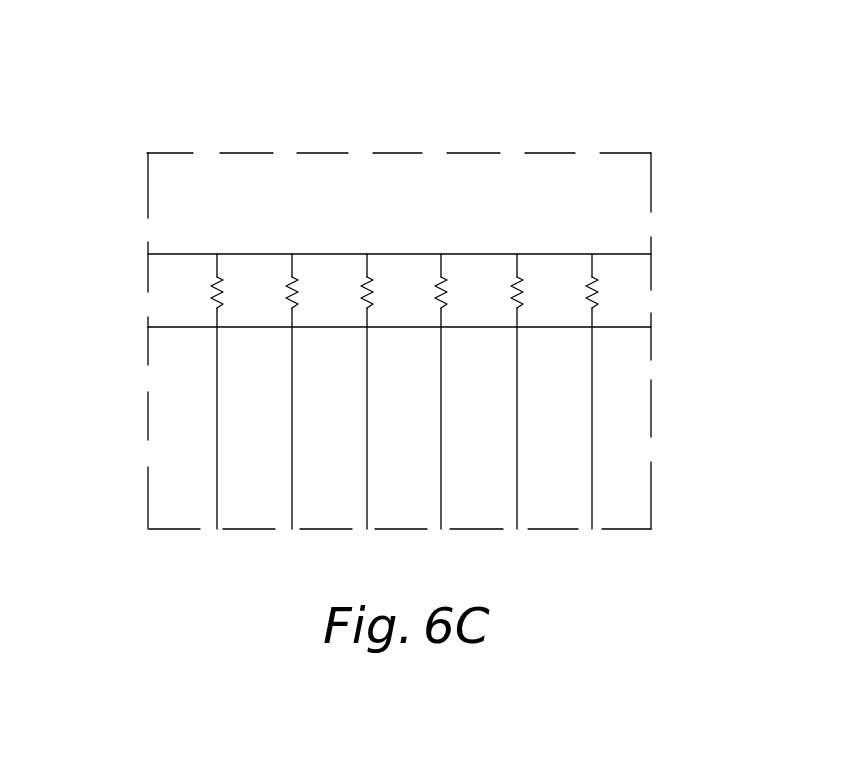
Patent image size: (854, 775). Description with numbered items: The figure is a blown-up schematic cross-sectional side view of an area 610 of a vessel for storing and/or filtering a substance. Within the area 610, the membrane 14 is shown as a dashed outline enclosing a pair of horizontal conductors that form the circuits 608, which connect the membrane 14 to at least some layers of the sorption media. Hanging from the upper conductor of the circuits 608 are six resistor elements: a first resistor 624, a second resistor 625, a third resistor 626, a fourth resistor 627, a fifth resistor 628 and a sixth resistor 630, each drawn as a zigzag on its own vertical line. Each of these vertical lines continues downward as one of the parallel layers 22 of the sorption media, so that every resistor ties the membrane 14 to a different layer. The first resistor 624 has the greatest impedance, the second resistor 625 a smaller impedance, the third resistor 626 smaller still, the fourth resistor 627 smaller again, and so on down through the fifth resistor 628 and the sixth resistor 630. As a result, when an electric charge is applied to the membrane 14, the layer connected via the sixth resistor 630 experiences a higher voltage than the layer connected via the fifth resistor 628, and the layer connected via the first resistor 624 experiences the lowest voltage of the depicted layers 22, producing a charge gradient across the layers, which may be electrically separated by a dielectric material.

The area of the vessel 610 is at (183, 73).
The membrane 14 is at (618, 253).
The circuits 608 is at (407, 268).
The parallel layers 22 is at (517, 443).
The first resistor 624 is at (210, 287).
The second resistor 625 is at (287, 286).
The third resistor 626 is at (359, 289).
The fourth resistor 627 is at (450, 288).
The fifth resistor 628 is at (523, 285).
The sixth resistor 630 is at (597, 289).